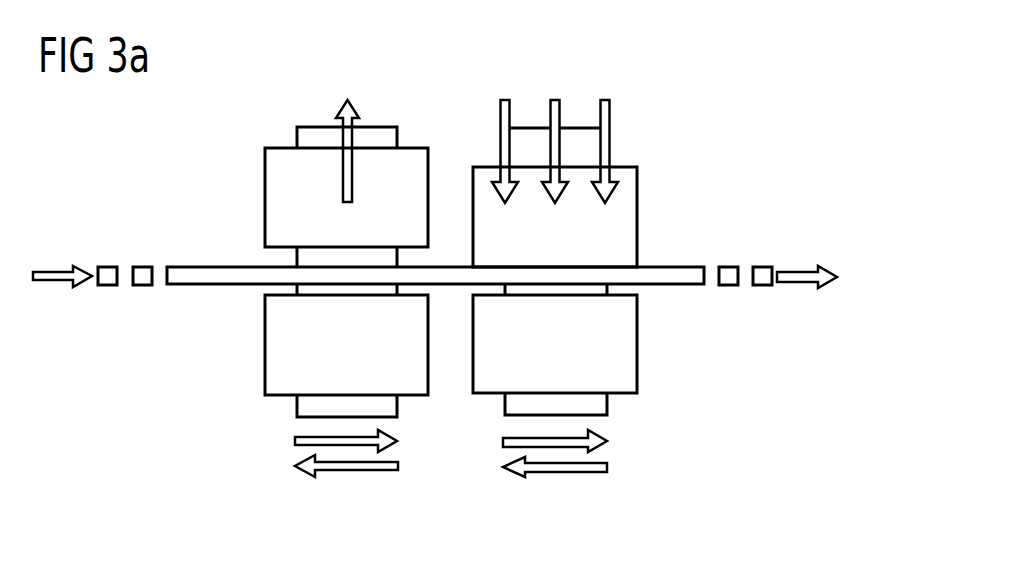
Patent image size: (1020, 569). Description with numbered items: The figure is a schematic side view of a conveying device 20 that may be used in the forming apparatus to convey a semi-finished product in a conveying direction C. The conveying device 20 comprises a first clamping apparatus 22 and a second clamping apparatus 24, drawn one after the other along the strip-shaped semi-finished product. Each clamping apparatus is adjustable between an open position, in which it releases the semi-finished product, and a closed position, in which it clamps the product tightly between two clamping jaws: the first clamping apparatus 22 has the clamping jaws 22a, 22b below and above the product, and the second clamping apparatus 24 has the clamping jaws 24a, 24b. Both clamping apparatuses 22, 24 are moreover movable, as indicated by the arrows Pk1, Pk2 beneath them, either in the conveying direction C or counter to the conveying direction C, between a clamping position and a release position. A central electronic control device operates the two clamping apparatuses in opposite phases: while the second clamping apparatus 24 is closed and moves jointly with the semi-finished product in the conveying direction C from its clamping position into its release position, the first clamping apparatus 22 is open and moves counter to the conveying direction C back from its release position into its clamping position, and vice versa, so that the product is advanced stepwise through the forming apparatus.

The conveying device 20 is at (641, 89).
The first clamping apparatus 22 is at (306, 258).
The clamping jaw 22a is at (275, 352).
The clamping jaw 22b is at (275, 202).
The second clamping apparatus 24 is at (598, 277).
The clamping jaw 24a is at (625, 355).
The clamping jaw 24b is at (625, 228).
The conveying direction C is at (797, 272).
The arrow Pk1 is at (346, 463).
The arrow Pk2 is at (557, 463).